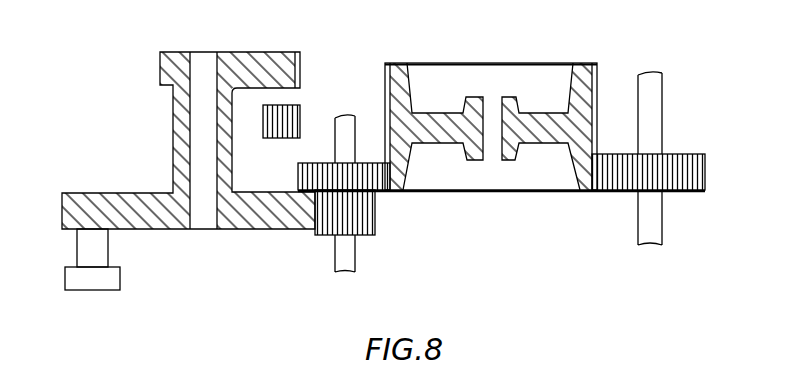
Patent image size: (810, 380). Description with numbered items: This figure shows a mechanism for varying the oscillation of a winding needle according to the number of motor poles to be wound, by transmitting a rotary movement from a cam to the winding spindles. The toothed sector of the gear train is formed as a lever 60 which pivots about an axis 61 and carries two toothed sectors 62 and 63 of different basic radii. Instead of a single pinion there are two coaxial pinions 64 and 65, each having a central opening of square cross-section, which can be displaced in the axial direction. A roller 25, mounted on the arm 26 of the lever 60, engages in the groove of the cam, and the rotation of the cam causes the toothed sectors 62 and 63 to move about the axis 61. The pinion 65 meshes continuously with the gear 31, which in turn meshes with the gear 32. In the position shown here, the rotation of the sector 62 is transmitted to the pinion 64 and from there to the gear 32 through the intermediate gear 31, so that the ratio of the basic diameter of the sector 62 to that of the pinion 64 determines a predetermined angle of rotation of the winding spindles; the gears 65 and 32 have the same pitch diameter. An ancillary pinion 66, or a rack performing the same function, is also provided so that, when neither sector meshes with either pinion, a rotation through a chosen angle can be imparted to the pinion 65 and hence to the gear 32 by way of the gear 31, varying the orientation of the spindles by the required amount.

The roller 25 is at (97, 279).
The arm 26 is at (92, 250).
The gear 31 is at (405, 92).
The gear 32 is at (683, 180).
The lever 60 is at (147, 207).
The axis 61 is at (200, 60).
The toothed sector 62 is at (248, 208).
The toothed sector 63 is at (267, 62).
The pinion 64 is at (362, 232).
The pinion 65 is at (378, 187).
The ancillary pinion 66 is at (293, 108).